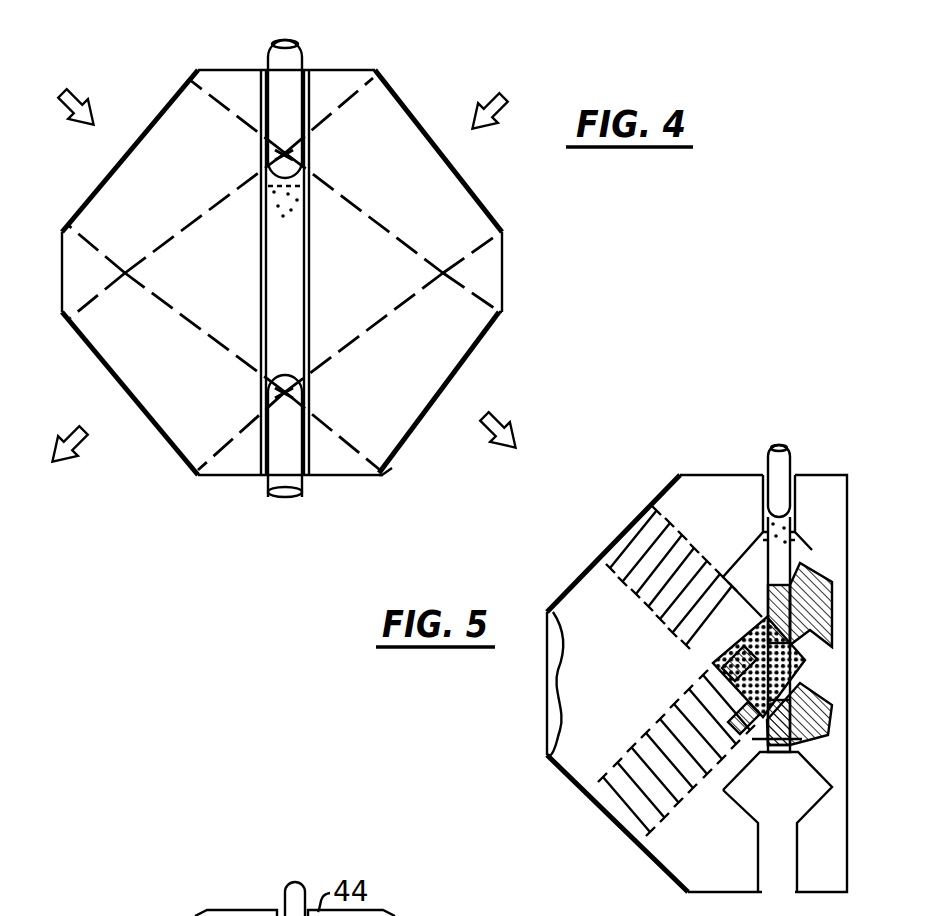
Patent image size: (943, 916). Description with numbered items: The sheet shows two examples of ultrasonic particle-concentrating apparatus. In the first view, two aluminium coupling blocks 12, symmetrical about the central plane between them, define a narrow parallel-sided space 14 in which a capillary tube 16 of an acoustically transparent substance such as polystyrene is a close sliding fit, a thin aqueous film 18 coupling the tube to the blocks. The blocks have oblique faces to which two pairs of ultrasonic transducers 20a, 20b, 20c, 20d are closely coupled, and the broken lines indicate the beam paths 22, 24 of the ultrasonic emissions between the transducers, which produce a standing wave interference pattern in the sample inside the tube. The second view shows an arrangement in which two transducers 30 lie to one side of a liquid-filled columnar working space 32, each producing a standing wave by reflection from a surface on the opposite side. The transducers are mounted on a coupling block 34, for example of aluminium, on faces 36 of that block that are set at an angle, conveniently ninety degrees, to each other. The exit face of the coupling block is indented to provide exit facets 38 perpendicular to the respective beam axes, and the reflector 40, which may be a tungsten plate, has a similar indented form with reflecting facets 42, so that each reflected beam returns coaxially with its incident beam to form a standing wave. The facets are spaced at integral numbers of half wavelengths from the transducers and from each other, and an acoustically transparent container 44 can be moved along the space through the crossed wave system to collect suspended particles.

In FIG. 4, the coupling blocks 12 is at (293, 289).
In FIG. 4, the parallel-sided space 14 is at (310, 452).
In FIG. 4, the capillary tube 16 is at (305, 46).
In FIG. 4, the thin aqueous film 18 is at (262, 68).
In FIG. 4, the ultrasonic transducer 20a is at (160, 118).
In FIG. 4, the ultrasonic transducer 20b is at (462, 178).
In FIG. 4, the ultrasonic transducer 20c is at (106, 370).
In FIG. 4, the ultrasonic transducer 20d is at (447, 388).
In FIG. 4, the beam path 22 is at (388, 473).
In FIG. 4, the beam path 24 is at (373, 64).
In FIG. 5, the transducers 30 is at (606, 562).
In FIG. 5, the liquid-filled columnar working space 32 is at (783, 826).
In FIG. 5, the coupling block 34 is at (568, 592).
In FIG. 5, the faces 36 is at (562, 700).
In FIG. 5, the exit facets 38 is at (742, 818).
In FIG. 5, the reflector 40 is at (813, 485).
In FIG. 5, the reflecting facets 42 is at (798, 614).
In FIG. 5, the acoustically transparent container 44 is at (797, 540).